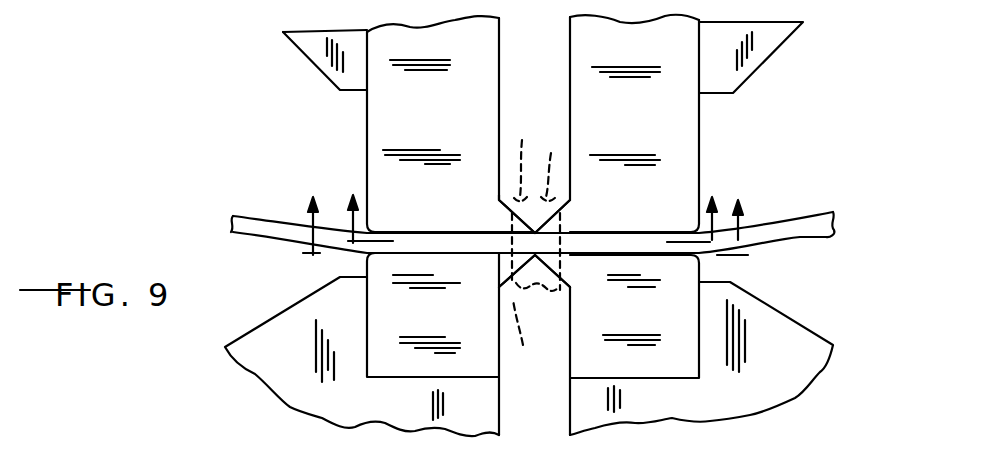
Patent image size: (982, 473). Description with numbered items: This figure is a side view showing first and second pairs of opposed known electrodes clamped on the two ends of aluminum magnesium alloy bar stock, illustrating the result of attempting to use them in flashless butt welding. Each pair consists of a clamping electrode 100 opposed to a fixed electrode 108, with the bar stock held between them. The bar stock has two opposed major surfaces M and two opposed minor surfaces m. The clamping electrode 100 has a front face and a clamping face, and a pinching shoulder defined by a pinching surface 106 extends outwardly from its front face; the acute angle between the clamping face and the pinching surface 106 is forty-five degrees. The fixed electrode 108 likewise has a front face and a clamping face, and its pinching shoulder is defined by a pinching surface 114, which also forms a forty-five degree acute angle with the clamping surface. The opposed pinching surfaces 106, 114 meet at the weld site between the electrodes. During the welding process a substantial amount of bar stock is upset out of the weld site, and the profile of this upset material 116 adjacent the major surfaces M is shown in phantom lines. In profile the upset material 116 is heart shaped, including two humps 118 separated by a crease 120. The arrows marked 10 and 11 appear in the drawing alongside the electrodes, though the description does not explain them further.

The clamping electrode 100 is at (367, 120).
The fixed electrode 108 is at (367, 267).
The pinching surface 106 is at (502, 212).
The pinching surface 114 is at (559, 293).
The upset material 116 is at (530, 345).
The humps 118 is at (522, 140).
The crease 120 is at (530, 197).
The direction arrow 10 is at (523, 223).
The direction arrow 11 is at (536, 202).
The major surfaces M is at (532, 208).
The minor surfaces m is at (808, 240).